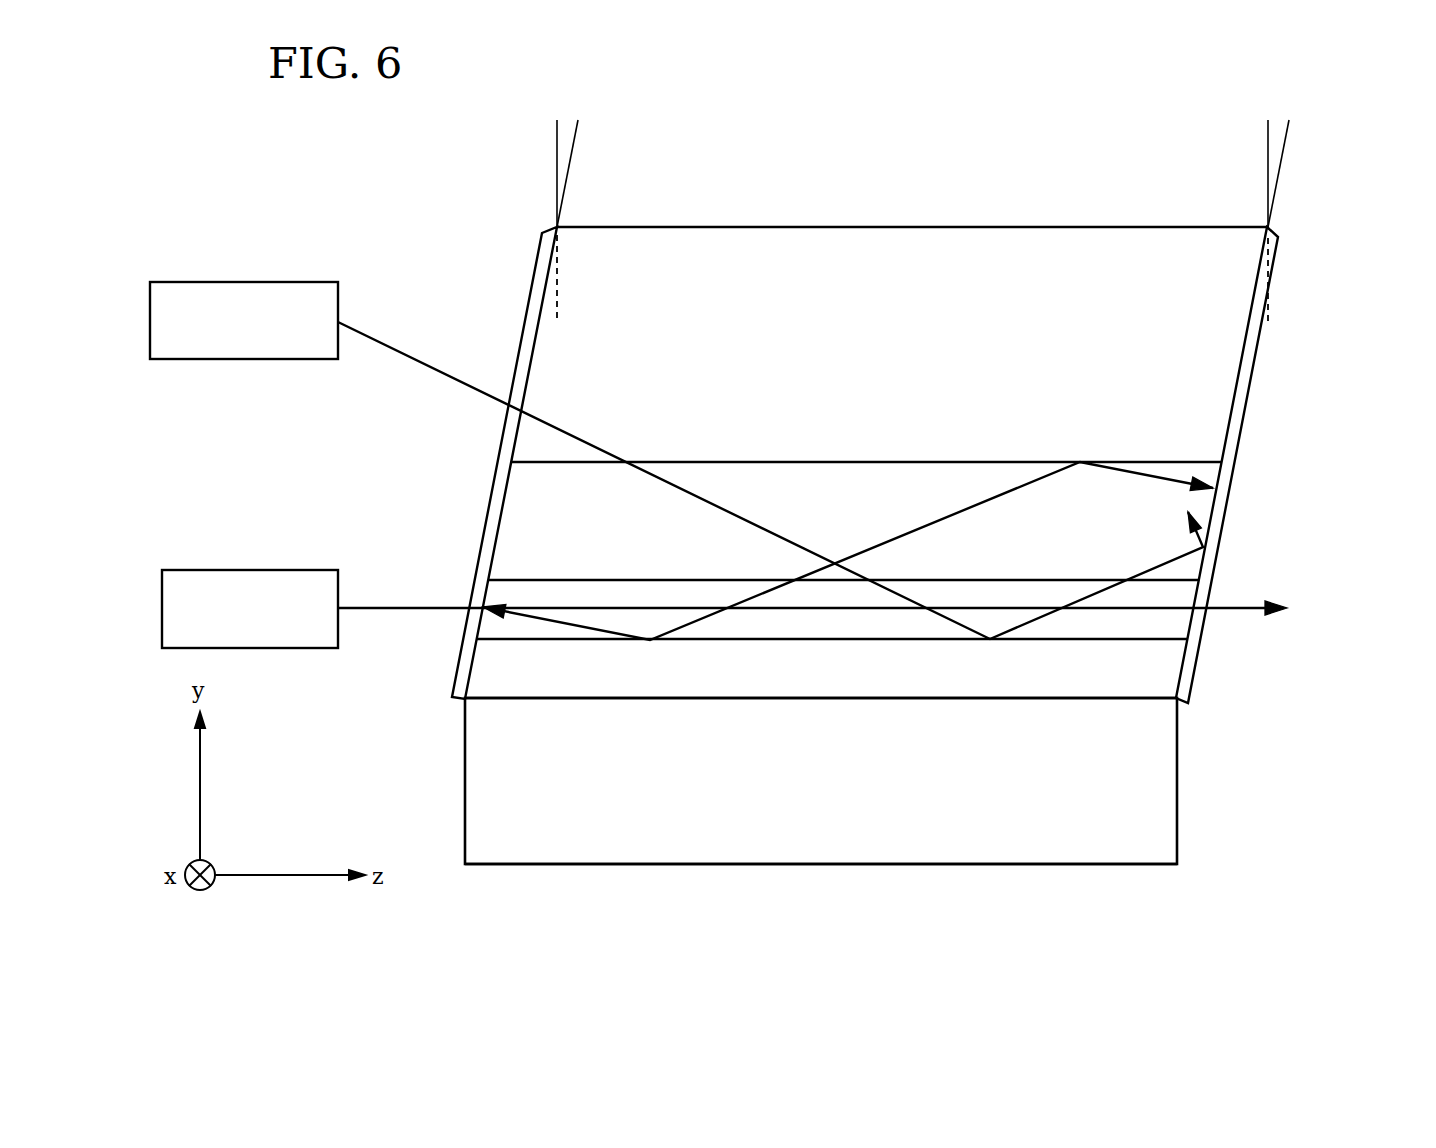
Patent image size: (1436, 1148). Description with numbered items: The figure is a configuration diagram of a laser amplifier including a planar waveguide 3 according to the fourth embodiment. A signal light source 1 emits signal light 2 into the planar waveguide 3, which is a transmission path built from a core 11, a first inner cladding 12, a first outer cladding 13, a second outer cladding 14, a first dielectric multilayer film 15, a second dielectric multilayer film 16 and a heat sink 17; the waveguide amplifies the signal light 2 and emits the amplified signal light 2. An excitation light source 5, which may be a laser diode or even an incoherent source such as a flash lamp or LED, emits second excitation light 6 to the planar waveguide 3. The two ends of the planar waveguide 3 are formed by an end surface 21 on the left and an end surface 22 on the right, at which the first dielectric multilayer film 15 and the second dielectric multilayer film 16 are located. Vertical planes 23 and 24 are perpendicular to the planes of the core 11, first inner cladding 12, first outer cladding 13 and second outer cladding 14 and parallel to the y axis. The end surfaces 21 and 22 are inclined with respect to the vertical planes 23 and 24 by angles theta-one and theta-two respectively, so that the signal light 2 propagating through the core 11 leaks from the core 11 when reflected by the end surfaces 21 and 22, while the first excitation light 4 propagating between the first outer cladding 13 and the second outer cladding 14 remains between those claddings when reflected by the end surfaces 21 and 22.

The signal light source 1 is at (285, 570).
The signal light 2 is at (388, 606).
The planar waveguide 3 is at (800, 866).
The first excitation light 4 is at (990, 495).
The excitation light source 5 is at (297, 282).
The second excitation light 6 is at (405, 356).
The core 11 is at (1172, 628).
The first inner cladding 12 is at (1198, 472).
The first outer cladding 13 is at (1217, 345).
The second outer cladding 14 is at (1165, 675).
The first dielectric multilayer film 15 is at (450, 672).
The second dielectric multilayer film 16 is at (1182, 705).
The heat sink 17 is at (1128, 840).
The end surface 21 is at (556, 228).
The end surface 22 is at (1270, 231).
The vertical plane 23 is at (560, 270).
The vertical plane 24 is at (1275, 262).